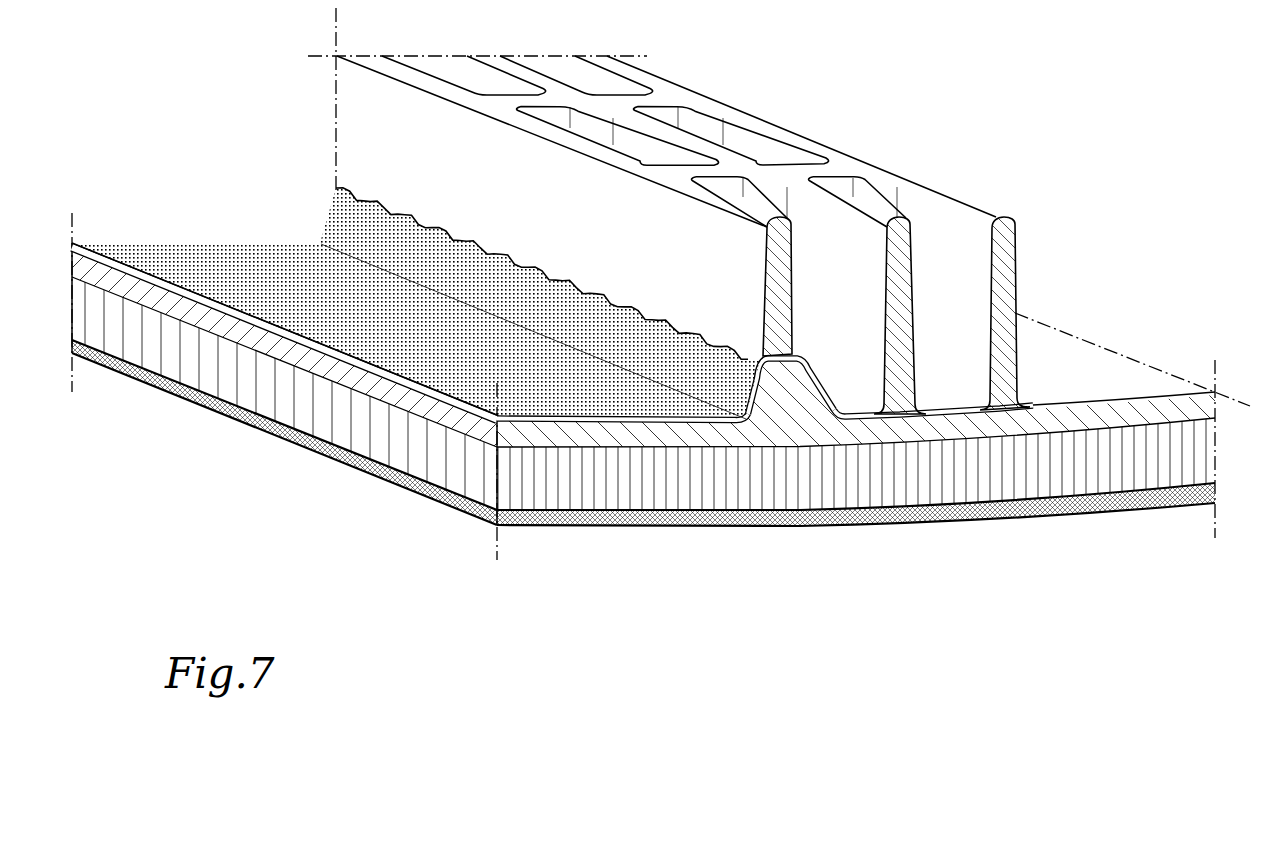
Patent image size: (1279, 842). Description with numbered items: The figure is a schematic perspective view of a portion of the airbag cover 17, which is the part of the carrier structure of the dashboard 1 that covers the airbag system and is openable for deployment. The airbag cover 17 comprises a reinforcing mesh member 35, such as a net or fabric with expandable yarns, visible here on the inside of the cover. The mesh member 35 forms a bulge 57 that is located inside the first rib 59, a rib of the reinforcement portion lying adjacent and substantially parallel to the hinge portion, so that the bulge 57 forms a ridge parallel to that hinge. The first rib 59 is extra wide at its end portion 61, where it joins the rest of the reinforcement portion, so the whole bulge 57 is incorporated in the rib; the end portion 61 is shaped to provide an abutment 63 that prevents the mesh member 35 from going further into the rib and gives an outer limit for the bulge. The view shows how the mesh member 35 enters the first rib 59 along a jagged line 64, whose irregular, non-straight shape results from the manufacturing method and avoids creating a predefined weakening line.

The dashboard 1 is at (1075, 358).
The airbag cover 17 is at (953, 160).
The mesh member 35 is at (257, 250).
The bulge 57 is at (787, 355).
The first rib 59 is at (780, 256).
The end portion 61 is at (788, 403).
The abutment 63 is at (798, 357).
The jagged line 64 is at (620, 298).